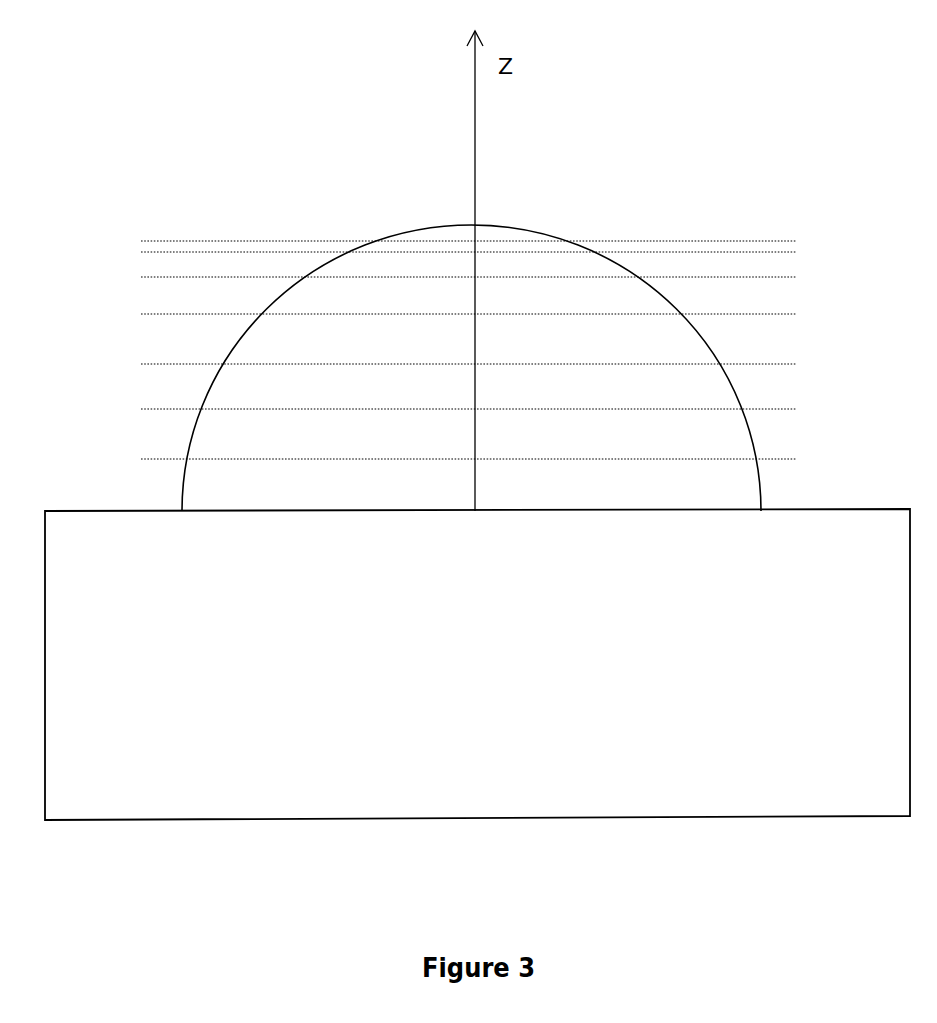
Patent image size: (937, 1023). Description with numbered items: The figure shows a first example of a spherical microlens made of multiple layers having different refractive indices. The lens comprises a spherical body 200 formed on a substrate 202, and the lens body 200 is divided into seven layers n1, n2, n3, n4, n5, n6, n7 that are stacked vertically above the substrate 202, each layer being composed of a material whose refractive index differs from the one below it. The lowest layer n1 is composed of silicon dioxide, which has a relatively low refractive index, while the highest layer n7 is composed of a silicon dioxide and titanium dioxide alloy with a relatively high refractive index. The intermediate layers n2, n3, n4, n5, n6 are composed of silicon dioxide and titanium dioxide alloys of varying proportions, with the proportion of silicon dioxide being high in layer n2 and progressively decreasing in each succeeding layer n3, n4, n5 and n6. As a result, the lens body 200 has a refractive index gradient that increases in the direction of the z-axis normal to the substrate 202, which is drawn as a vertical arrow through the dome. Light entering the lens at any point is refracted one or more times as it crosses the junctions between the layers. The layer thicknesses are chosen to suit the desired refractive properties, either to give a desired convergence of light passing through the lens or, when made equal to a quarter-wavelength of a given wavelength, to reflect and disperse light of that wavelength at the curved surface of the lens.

The spherical body 200 is at (160, 473).
The substrate 202 is at (537, 639).
The lowest layer n1 is at (488, 480).
The intermediate layer n2 is at (488, 430).
The intermediate layer n3 is at (488, 383).
The intermediate layer n4 is at (488, 334).
The intermediate layer n5 is at (488, 290).
The intermediate layer n6 is at (488, 266).
The highest layer n7 is at (488, 246).